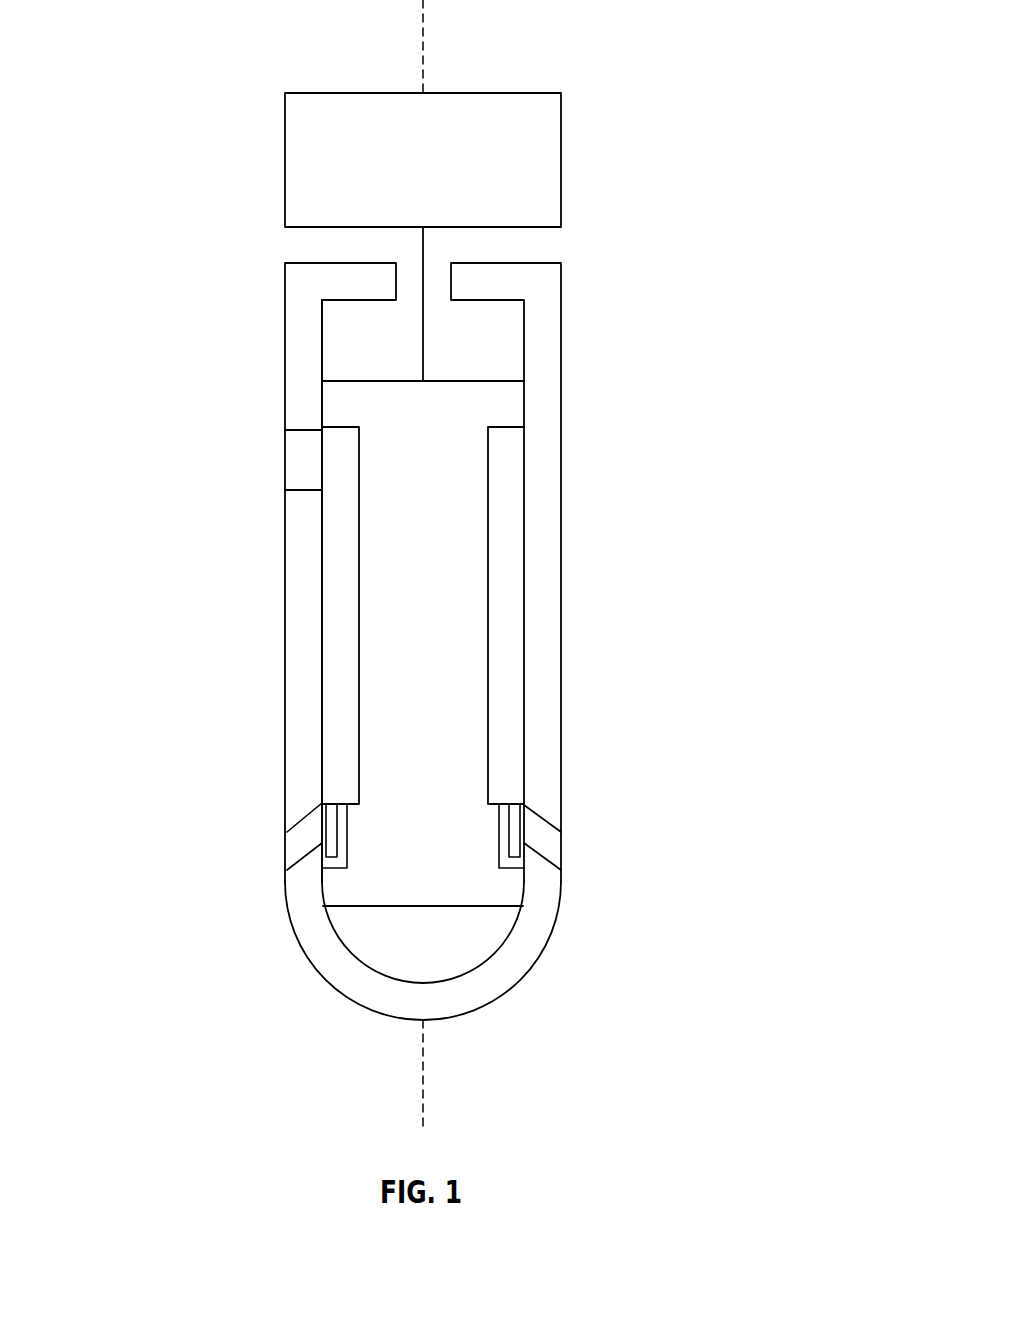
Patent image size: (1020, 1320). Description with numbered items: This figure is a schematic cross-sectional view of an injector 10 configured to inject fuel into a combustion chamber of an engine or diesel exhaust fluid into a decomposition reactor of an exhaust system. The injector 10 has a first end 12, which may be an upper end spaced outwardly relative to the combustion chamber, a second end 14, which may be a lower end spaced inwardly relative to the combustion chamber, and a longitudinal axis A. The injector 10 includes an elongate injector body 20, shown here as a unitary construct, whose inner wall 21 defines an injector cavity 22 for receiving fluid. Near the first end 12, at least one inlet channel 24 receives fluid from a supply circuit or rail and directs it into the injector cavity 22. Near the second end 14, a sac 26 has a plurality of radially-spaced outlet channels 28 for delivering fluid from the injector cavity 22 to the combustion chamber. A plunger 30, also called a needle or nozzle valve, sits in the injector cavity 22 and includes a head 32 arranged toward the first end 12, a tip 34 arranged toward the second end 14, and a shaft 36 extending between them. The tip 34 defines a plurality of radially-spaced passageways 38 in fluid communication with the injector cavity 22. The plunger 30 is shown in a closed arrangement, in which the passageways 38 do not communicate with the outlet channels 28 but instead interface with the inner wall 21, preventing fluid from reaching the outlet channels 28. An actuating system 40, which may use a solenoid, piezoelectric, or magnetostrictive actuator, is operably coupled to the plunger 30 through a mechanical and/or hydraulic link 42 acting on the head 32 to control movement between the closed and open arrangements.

The injector 10 is at (695, 188).
The first end 12 is at (181, 239).
The second end 14 is at (266, 978).
The injector body 20 is at (547, 382).
The inner wall 21 is at (322, 563).
The injector cavity 22 is at (510, 522).
The inlet channel 24 is at (290, 458).
The sac 26 is at (461, 941).
The outlet channel 28 is at (544, 846).
The plunger 30 is at (432, 633).
The head 32 is at (322, 406).
The tip 34 is at (525, 888).
The shaft 36 is at (359, 616).
The passageway 38 is at (513, 796).
The actuating system 40 is at (423, 160).
The link 42 is at (427, 263).
The longitudinal axis A is at (432, 1077).